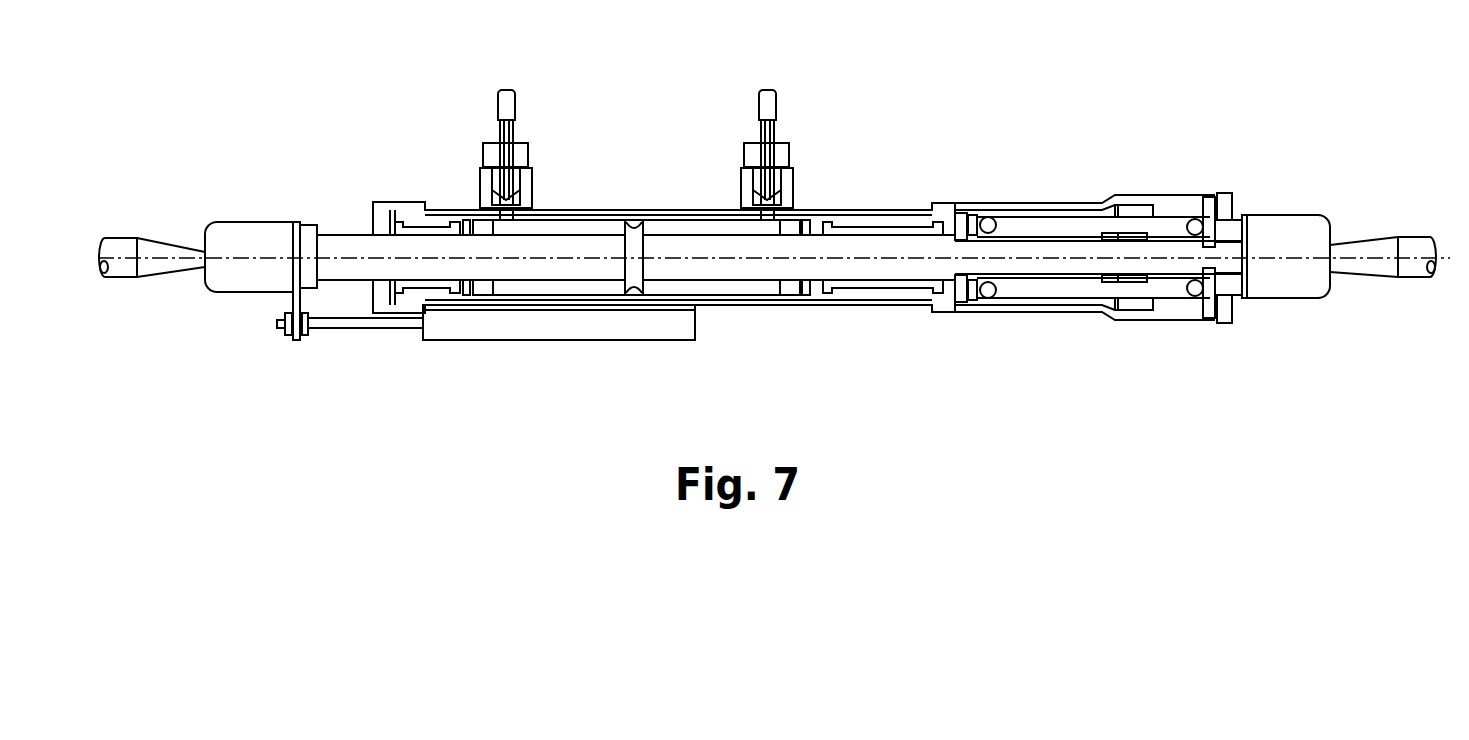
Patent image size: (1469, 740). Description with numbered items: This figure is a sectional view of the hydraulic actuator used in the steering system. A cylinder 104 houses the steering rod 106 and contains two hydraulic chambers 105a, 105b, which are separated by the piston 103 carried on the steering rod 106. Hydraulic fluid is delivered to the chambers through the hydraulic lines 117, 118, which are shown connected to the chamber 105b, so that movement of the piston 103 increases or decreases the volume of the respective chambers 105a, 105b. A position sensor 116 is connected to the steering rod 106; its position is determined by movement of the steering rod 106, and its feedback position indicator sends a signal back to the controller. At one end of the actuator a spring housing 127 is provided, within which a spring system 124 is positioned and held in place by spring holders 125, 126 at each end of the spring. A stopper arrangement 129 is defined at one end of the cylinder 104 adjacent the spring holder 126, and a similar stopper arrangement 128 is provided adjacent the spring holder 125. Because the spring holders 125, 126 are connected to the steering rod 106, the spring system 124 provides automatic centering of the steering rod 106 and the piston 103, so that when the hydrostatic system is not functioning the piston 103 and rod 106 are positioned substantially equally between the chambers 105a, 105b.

The piston 103 is at (700, 283).
The cylinder 104 is at (412, 303).
The chamber 105a is at (560, 222).
The chamber 105b is at (723, 225).
The steering rod 106 is at (365, 225).
The position sensor 116 is at (547, 323).
The hydraulic line 117 is at (508, 108).
The hydraulic line 118 is at (768, 108).
The spring system 124 is at (992, 298).
The spring holder 125 is at (975, 215).
The spring holder 126 is at (1342, 125).
The spring housing 127 is at (1048, 205).
The stopper arrangement 128 is at (963, 288).
The stopper arrangement 129 is at (1232, 314).